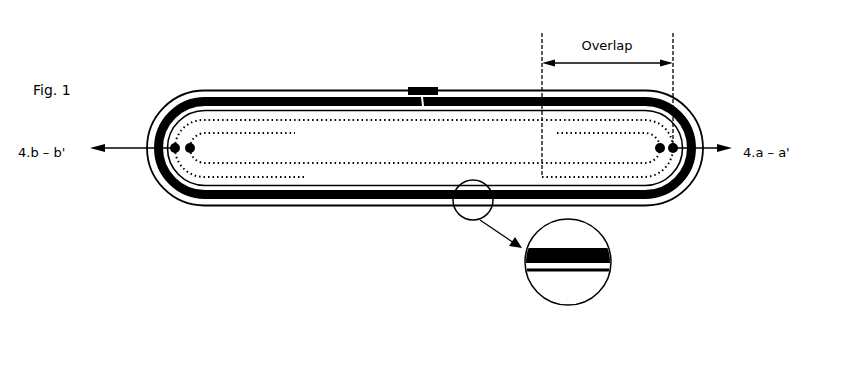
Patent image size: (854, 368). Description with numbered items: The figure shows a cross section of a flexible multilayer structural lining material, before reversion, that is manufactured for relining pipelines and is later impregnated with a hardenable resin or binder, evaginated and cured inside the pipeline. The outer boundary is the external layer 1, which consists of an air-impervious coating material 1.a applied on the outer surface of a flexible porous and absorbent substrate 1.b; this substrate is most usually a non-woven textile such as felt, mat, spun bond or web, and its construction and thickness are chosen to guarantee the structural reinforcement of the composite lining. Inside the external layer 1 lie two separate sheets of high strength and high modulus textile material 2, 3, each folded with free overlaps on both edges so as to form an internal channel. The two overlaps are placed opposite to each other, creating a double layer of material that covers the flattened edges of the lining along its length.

The external layer 1 is at (175, 185).
The high strength and high modulus textile sheet 2 is at (249, 178).
The high strength and high modulus textile sheet 3 is at (350, 164).
The air-impervious coating material 1.a is at (573, 273).
The flexible porous and absorbent substrate 1.b is at (612, 257).